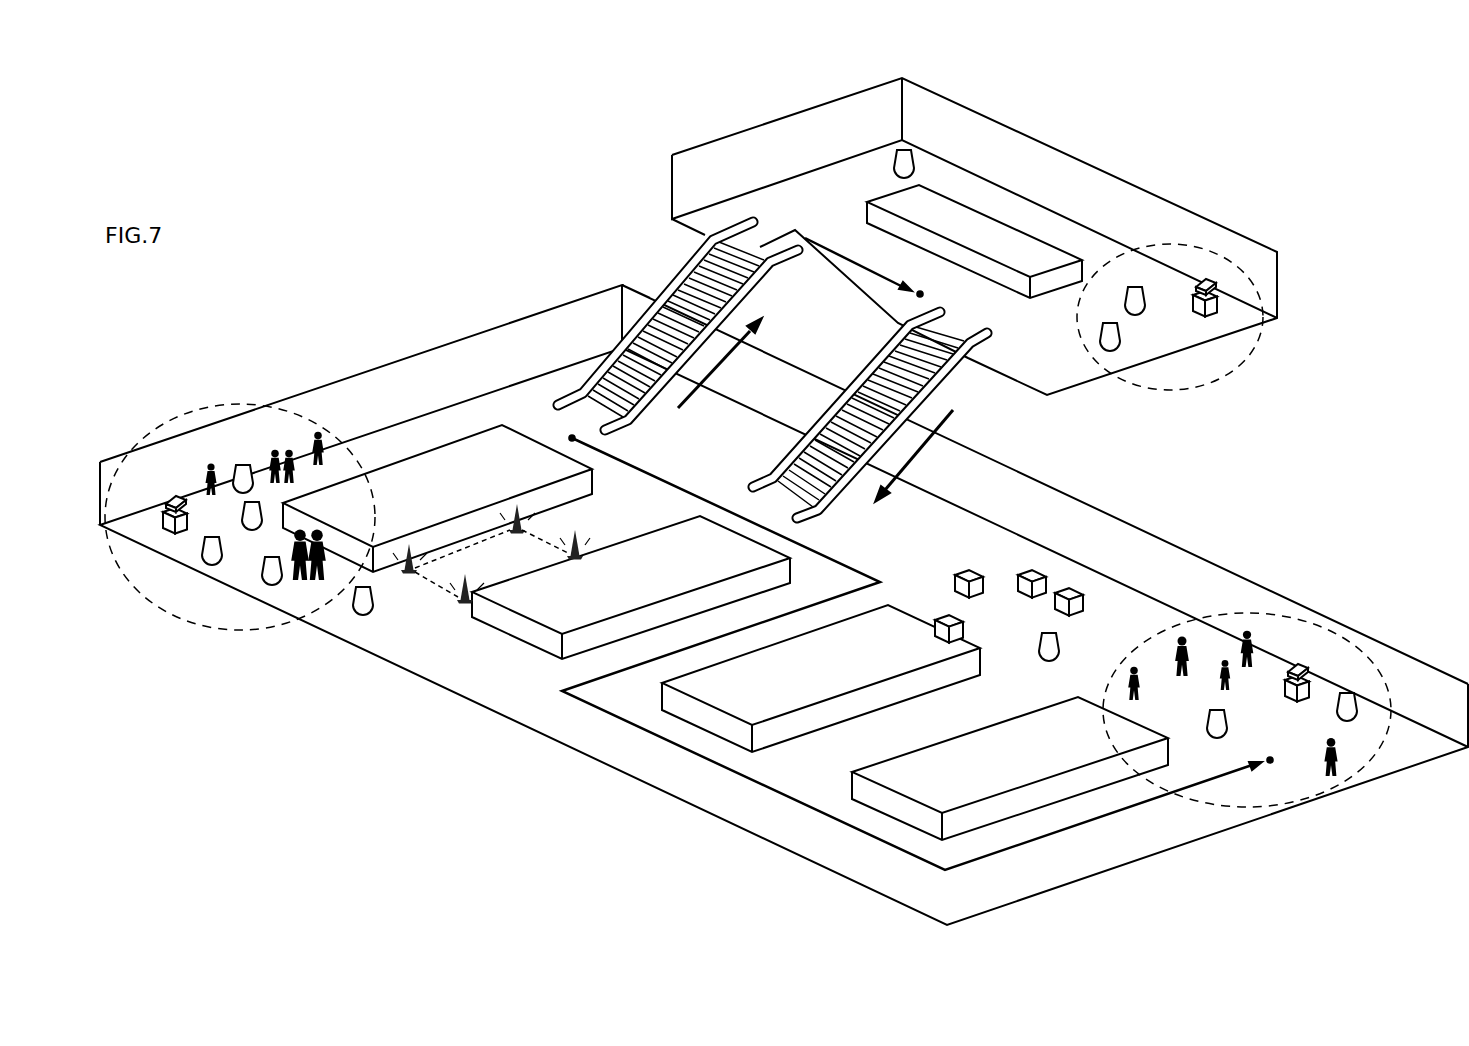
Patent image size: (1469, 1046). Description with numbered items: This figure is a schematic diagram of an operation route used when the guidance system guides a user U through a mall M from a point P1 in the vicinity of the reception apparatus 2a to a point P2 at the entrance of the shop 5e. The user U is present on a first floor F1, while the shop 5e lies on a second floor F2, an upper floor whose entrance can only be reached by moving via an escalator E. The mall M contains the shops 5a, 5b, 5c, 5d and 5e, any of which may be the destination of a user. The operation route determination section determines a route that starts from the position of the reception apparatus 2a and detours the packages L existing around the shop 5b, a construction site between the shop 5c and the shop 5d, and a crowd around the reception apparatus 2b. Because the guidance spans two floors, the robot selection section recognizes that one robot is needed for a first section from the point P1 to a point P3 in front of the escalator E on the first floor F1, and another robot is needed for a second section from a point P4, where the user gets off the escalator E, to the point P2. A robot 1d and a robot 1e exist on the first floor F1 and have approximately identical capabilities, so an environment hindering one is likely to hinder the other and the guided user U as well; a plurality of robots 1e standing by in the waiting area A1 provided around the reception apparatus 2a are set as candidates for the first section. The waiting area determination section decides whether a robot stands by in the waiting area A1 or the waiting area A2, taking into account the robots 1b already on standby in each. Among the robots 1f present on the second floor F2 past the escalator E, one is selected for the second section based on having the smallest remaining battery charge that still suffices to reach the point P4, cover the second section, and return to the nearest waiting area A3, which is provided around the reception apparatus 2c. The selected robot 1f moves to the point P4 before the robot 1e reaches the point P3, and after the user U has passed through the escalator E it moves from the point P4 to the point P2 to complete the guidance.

The robot 1b is at (243, 465).
The robot 1d is at (1060, 650).
The robot 1e is at (1346, 693).
The robot 1f is at (896, 166).
The reception apparatus 2a is at (1298, 662).
The reception apparatus 2b is at (175, 494).
The reception apparatus 2c is at (1205, 292).
The shop 5a is at (1022, 758).
The shop 5b is at (836, 673).
The shop 5c is at (644, 588).
The shop 5d is at (449, 495).
The shop 5e is at (990, 243).
The waiting area A1 is at (1180, 726).
The waiting area A2 is at (161, 582).
The waiting area A3 is at (1222, 381).
The escalator E is at (672, 280).
The first floor F1 is at (912, 566).
The second floor F2 is at (1068, 365).
The packages L is at (1043, 565).
The mall M is at (1330, 182).
The point P1 is at (1278, 760).
The point P2 is at (928, 284).
The point P3 is at (895, 643).
The point P4 is at (839, 245).
The user U is at (1340, 766).